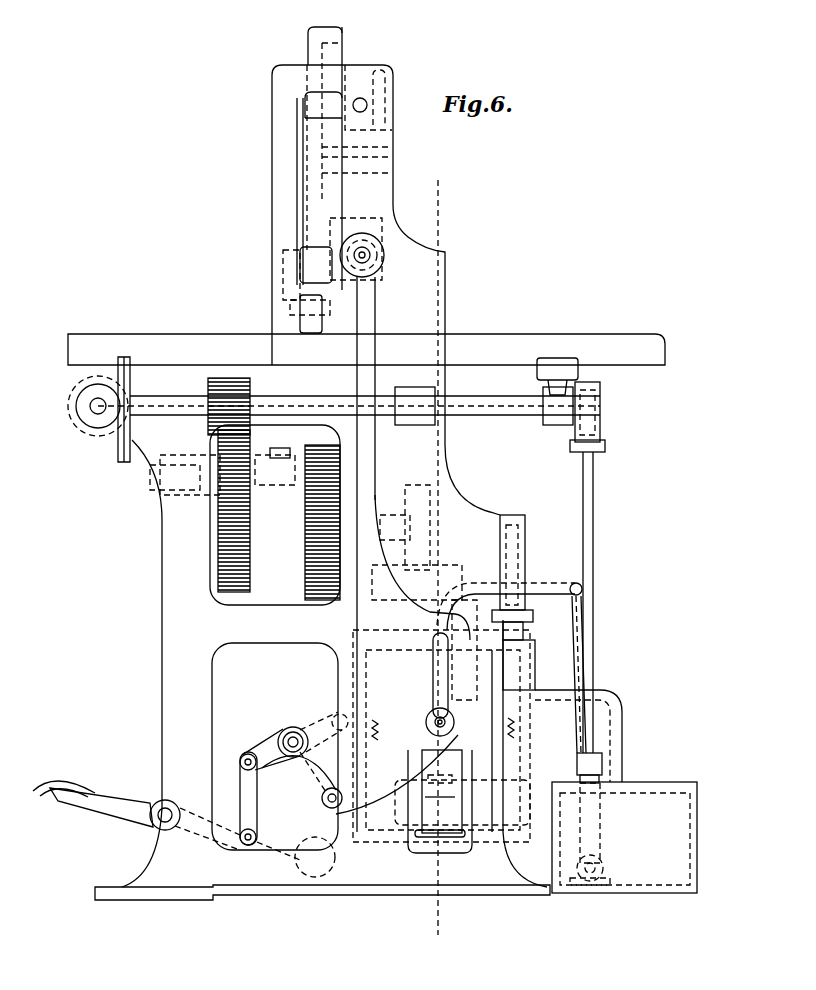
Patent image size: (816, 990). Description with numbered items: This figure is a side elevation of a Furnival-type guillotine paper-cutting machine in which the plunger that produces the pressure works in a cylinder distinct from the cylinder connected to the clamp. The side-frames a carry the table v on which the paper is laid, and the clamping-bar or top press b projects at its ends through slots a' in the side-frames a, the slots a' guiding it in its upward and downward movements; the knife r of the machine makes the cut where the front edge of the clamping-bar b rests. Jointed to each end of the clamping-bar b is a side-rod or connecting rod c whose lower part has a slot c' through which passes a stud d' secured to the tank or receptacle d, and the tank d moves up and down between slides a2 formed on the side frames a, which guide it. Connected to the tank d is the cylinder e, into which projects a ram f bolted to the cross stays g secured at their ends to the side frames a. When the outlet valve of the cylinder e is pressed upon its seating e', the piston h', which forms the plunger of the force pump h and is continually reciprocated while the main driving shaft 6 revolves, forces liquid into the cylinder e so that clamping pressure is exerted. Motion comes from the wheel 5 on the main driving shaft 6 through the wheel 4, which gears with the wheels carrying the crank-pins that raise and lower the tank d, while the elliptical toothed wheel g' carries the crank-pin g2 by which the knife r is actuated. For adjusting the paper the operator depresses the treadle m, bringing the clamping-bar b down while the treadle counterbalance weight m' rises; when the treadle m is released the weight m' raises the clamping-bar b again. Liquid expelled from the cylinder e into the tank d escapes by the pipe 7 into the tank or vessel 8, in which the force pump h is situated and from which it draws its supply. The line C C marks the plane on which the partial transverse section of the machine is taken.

The side-frames a is at (322, 463).
The slots a' is at (346, 152).
The slides a2 is at (441, 736).
The clamping-bar or top press b is at (345, 222).
The side-rod or connecting rod c is at (397, 583).
The slot c' is at (440, 659).
The section line C C is at (442, 559).
The tank or receptacle d is at (570, 771).
The stud d' is at (424, 722).
The cylinder e is at (511, 668).
The seating e' is at (440, 801).
The ram f is at (444, 732).
The cross stays g is at (477, 577).
The elliptical toothed wheel g' is at (306, 525).
The crank-pin g2 is at (278, 464).
The force pump h is at (583, 582).
The piston h' is at (574, 795).
The treadle m is at (184, 818).
The treadle counterbalance weight m' is at (294, 778).
The knife r is at (345, 252).
The table v is at (366, 349).
The wheel 4 is at (334, 445).
The wheel 5 is at (320, 518).
The main driving shaft 6 is at (248, 511).
The pipe 7 is at (585, 730).
The tank or vessel 8 is at (624, 837).